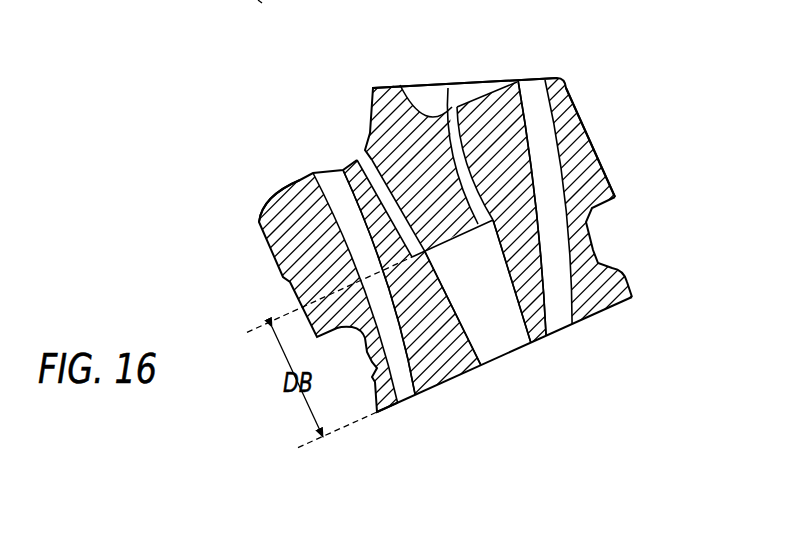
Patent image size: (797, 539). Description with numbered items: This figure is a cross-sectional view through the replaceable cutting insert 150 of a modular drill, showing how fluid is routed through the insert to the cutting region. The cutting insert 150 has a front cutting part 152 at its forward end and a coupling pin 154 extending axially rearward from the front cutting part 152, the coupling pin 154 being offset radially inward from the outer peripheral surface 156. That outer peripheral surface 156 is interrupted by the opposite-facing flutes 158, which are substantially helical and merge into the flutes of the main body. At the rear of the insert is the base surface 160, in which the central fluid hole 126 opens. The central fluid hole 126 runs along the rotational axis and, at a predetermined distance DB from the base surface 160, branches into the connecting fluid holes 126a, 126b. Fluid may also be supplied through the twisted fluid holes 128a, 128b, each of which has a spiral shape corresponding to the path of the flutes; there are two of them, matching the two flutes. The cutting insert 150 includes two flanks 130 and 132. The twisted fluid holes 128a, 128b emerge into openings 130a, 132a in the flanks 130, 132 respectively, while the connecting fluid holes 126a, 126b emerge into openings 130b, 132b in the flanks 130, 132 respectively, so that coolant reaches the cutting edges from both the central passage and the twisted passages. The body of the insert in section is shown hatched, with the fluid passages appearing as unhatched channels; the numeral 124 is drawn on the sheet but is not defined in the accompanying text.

The body 124 is at (372, 88).
The central fluid hole 126 is at (498, 340).
The connecting fluid hole 126a is at (400, 218).
The connecting fluid hole 126b is at (467, 145).
The twisted fluid hole 128a is at (420, 352).
The twisted fluid hole 128b is at (548, 196).
The flank 130 is at (277, 198).
The opening 130a is at (340, 169).
The opening 130b is at (364, 152).
The flank 132 is at (508, 80).
The opening 132a is at (537, 77).
The opening 132b is at (445, 88).
The cutting insert 150 is at (222, 212).
The front cutting part 152 is at (477, 41).
The coupling pin 154 is at (636, 238).
The outer peripheral surface 156 is at (580, 112).
The flute 158 is at (260, 0).
The base surface 160 is at (462, 372).